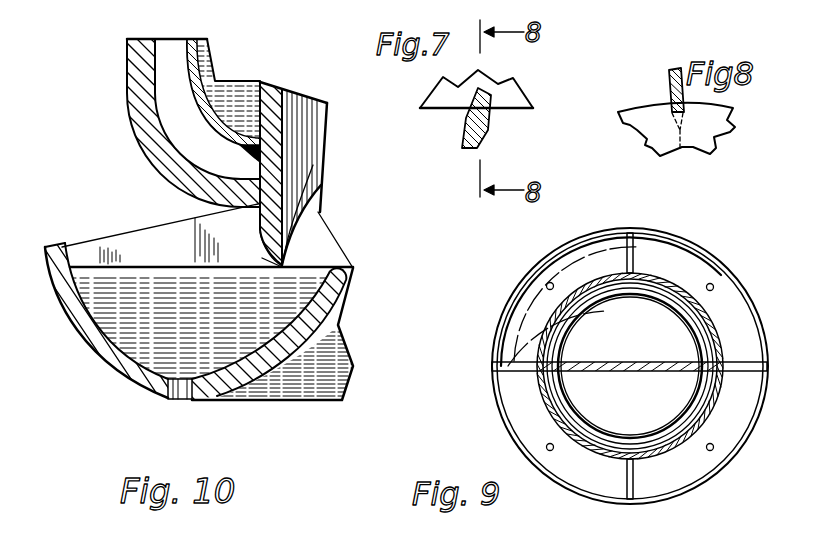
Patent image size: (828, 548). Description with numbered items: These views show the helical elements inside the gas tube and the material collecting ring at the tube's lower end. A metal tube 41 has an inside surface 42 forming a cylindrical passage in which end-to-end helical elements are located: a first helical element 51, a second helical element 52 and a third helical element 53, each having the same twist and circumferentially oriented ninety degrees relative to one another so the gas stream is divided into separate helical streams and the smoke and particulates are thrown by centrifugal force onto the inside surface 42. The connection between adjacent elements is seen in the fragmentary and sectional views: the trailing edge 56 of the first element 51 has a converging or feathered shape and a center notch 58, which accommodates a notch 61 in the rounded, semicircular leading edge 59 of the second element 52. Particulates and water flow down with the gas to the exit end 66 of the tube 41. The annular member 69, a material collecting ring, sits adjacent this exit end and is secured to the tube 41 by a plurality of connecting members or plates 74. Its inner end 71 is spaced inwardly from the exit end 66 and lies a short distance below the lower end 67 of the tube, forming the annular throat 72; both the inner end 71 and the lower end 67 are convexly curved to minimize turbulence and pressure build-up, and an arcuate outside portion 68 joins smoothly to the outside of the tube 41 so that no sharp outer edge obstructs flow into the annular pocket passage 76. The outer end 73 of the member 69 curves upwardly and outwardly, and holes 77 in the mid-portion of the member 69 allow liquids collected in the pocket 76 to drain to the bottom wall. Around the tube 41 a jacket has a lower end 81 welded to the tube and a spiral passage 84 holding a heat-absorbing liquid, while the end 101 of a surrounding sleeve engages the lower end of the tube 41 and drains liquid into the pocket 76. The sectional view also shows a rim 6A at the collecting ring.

In FIG. 10, the tube 41 is at (267, 84).
In FIG. 9, the tube 41 is at (690, 283).
In FIG. 10, the inside surface 42 is at (289, 110).
In FIG. 7, the first helical element 51 is at (436, 88).
In FIG. 8, the first helical element 51 is at (668, 82).
In FIG. 7, the second helical element 52 is at (490, 133).
In FIG. 8, the second helical element 52 is at (720, 126).
In FIG. 10, the third helical element 53 is at (315, 201).
In FIG. 9, the third helical element 53 is at (627, 362).
In FIG. 7, the trailing edge 56 is at (522, 110).
In FIG. 8, the trailing edge 56 is at (683, 148).
In FIG. 7, the center notch 58 is at (485, 100).
In FIG. 7, the leading edge 59 is at (482, 98).
In FIG. 8, the leading edge 59 is at (635, 108).
In FIG. 8, the notch 61 is at (633, 122).
In FIG. 10, the exit end 66 is at (263, 246).
In FIG. 10, the lower end 67 is at (292, 264).
In FIG. 10, the arcuate outside portion 68 is at (263, 259).
In FIG. 10, the annular member 69 is at (114, 375).
In FIG. 9, the annular member 69 is at (493, 334).
In FIG. 10, the upper rim 6A is at (347, 266).
In FIG. 10, the inner end 71 is at (333, 283).
In FIG. 9, the inner end 71 is at (650, 290).
In FIG. 10, the annular throat 72 is at (316, 263).
In FIG. 9, the annular throat 72 is at (690, 311).
In FIG. 10, the outer end 73 is at (65, 299).
In FIG. 10, the connecting members 74 is at (128, 243).
In FIG. 9, the connecting members 74 is at (646, 235).
In FIG. 10, the annular pocket 76 is at (185, 313).
In FIG. 10, the holes 77 is at (183, 394).
In FIG. 9, the holes 77 is at (547, 283).
In FIG. 10, the lower end 81 is at (203, 131).
In FIG. 10, the spiral passage 84 is at (239, 92).
In FIG. 10, the end 101 is at (147, 146).